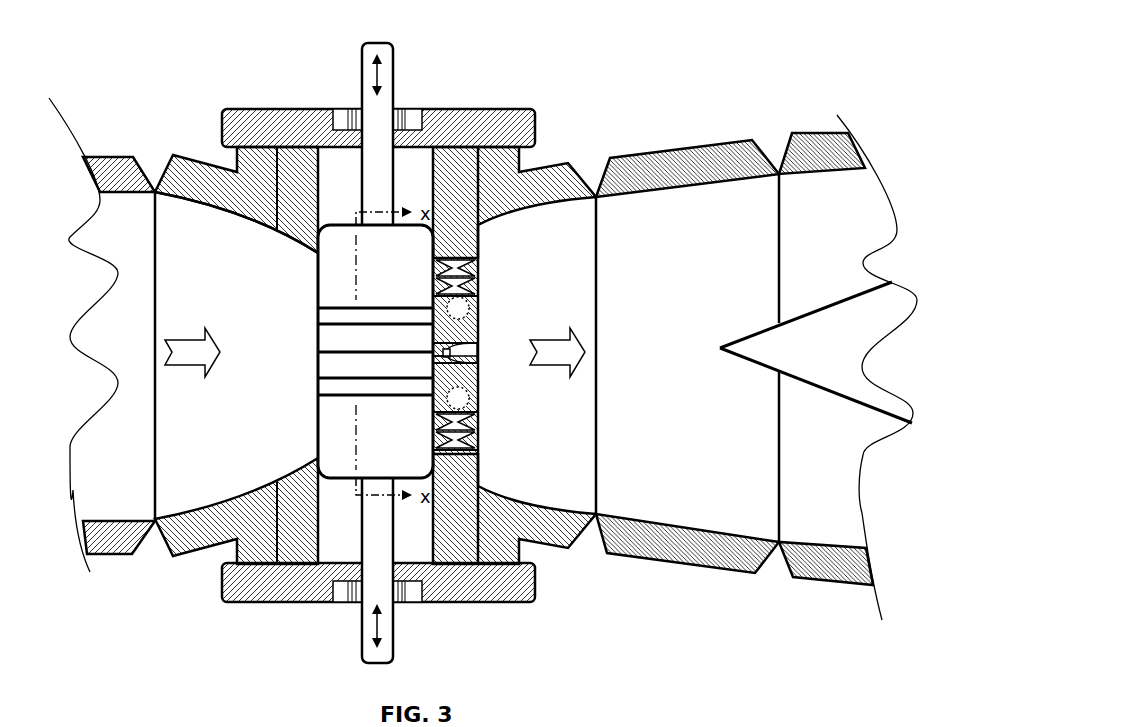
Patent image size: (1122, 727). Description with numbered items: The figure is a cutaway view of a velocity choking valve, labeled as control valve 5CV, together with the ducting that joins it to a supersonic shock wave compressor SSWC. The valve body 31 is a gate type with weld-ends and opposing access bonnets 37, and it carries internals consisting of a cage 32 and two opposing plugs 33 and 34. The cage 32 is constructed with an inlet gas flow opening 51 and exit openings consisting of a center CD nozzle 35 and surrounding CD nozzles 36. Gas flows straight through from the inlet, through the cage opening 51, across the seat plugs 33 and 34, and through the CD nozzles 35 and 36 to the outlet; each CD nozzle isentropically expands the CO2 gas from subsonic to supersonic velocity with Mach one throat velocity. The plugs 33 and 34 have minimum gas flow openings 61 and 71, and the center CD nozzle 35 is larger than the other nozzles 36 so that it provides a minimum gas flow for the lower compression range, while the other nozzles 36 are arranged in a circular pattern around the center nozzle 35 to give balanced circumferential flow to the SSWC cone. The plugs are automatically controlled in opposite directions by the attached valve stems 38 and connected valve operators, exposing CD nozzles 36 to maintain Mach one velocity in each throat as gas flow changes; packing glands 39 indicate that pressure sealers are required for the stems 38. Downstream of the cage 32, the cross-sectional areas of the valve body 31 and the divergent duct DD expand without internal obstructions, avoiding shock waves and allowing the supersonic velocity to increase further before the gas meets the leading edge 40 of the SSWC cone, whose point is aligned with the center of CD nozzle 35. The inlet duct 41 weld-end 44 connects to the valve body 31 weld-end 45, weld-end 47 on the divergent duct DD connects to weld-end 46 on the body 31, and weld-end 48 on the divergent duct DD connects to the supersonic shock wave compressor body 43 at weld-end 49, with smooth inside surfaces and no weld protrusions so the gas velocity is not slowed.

The control valve 5CV is at (178, 80).
The valve body 31 is at (212, 167).
The cage 32 is at (480, 243).
The plug 33 is at (332, 300).
The plug 34 is at (332, 423).
The center CD nozzle 35 is at (478, 364).
The surrounding CD nozzles 36 is at (478, 408).
The access bonnet 37 is at (287, 108).
The valve stem 38 is at (362, 77).
The packing gland 39 is at (398, 108).
The leading edge 40 is at (760, 343).
The inlet duct 41 is at (118, 556).
The supersonic shock wave compressor body 43 is at (860, 586).
The weld-end 44 is at (153, 191).
The weld-end 45 is at (163, 553).
The weld-end 46 is at (578, 554).
The weld-end 47 is at (605, 553).
The weld-end 48 is at (763, 153).
The weld-end 49 is at (790, 575).
The inlet gas flow opening 51 is at (290, 248).
The minimum gas flow opening 61 is at (318, 340).
The minimum gas flow opening 71 is at (318, 377).
The divergent duct DD is at (657, 148).
The supersonic shock wave compressor SSWC is at (810, 127).